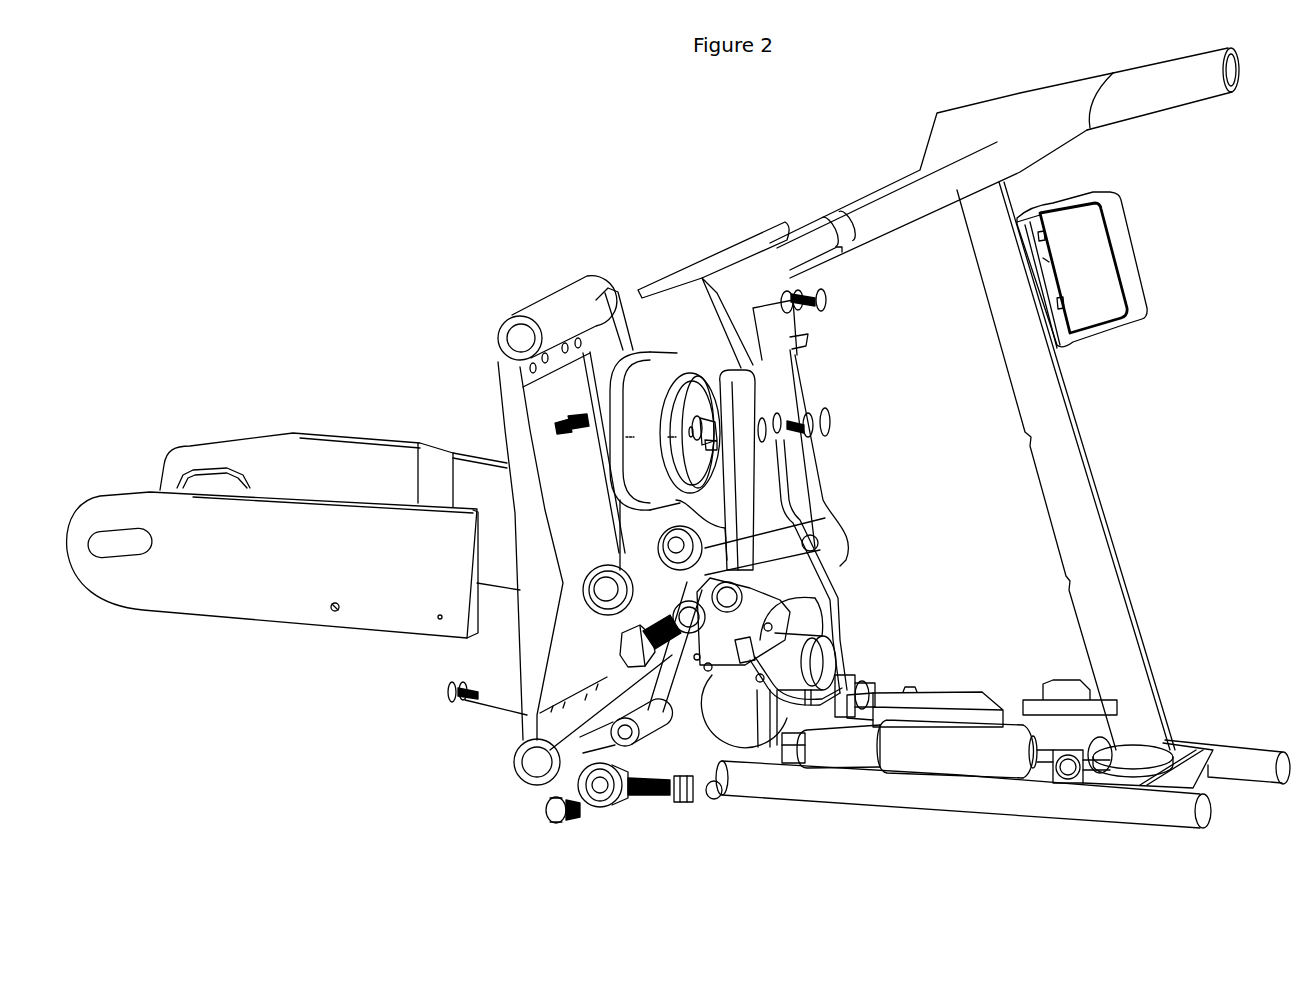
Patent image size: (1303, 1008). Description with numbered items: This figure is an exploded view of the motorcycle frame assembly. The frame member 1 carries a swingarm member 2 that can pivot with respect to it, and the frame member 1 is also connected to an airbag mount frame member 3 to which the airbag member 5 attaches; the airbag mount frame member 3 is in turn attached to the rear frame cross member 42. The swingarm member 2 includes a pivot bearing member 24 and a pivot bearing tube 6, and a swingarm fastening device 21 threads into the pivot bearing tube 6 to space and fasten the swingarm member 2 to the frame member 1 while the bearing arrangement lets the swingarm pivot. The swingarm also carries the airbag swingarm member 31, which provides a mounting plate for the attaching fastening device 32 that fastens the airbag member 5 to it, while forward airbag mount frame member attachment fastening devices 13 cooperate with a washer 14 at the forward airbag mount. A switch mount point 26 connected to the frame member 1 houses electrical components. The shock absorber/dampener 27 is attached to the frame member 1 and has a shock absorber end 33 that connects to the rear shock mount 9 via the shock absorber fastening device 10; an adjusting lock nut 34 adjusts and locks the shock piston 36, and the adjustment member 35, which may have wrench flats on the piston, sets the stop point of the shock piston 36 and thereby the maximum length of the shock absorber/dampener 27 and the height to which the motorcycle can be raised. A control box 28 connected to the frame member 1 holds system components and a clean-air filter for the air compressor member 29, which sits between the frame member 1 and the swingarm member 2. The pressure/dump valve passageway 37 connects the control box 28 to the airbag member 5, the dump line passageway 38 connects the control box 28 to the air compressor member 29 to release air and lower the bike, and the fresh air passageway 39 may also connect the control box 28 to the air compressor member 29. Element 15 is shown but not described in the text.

The frame member 1 is at (1185, 100).
The swingarm member 2 is at (558, 290).
The airbag mount frame member 3 is at (793, 372).
The airbag member 5 is at (647, 352).
The pivot bearing tube 6 is at (790, 567).
The rear shock mount 9 is at (648, 738).
The shock absorber fastening device 10 is at (545, 812).
The forward airbag mount frame member attachment fastening device 13 is at (837, 293).
The washer 14 is at (750, 316).
The screw 15 is at (848, 445).
The swingarm fastening device 21 is at (628, 647).
The pivot bearing member 24 is at (600, 565).
The switch mount point 26 is at (1123, 249).
The shock absorber/dampener 27 is at (943, 762).
The control box 28 is at (947, 707).
The air compressor member 29 is at (727, 667).
The airbag swingarm member 31 is at (500, 408).
The attaching fastening device 32 is at (447, 692).
The shock absorber end 33 is at (617, 803).
The adjusting lock nut 34 is at (683, 805).
The adjustment member 35 is at (783, 757).
The shock piston 36 is at (830, 745).
The pressure/dump valve passageway 37 is at (838, 598).
The dump line passageway 38 is at (867, 673).
The fresh air passageway 39 is at (750, 665).
The rear frame cross member 42 is at (663, 283).